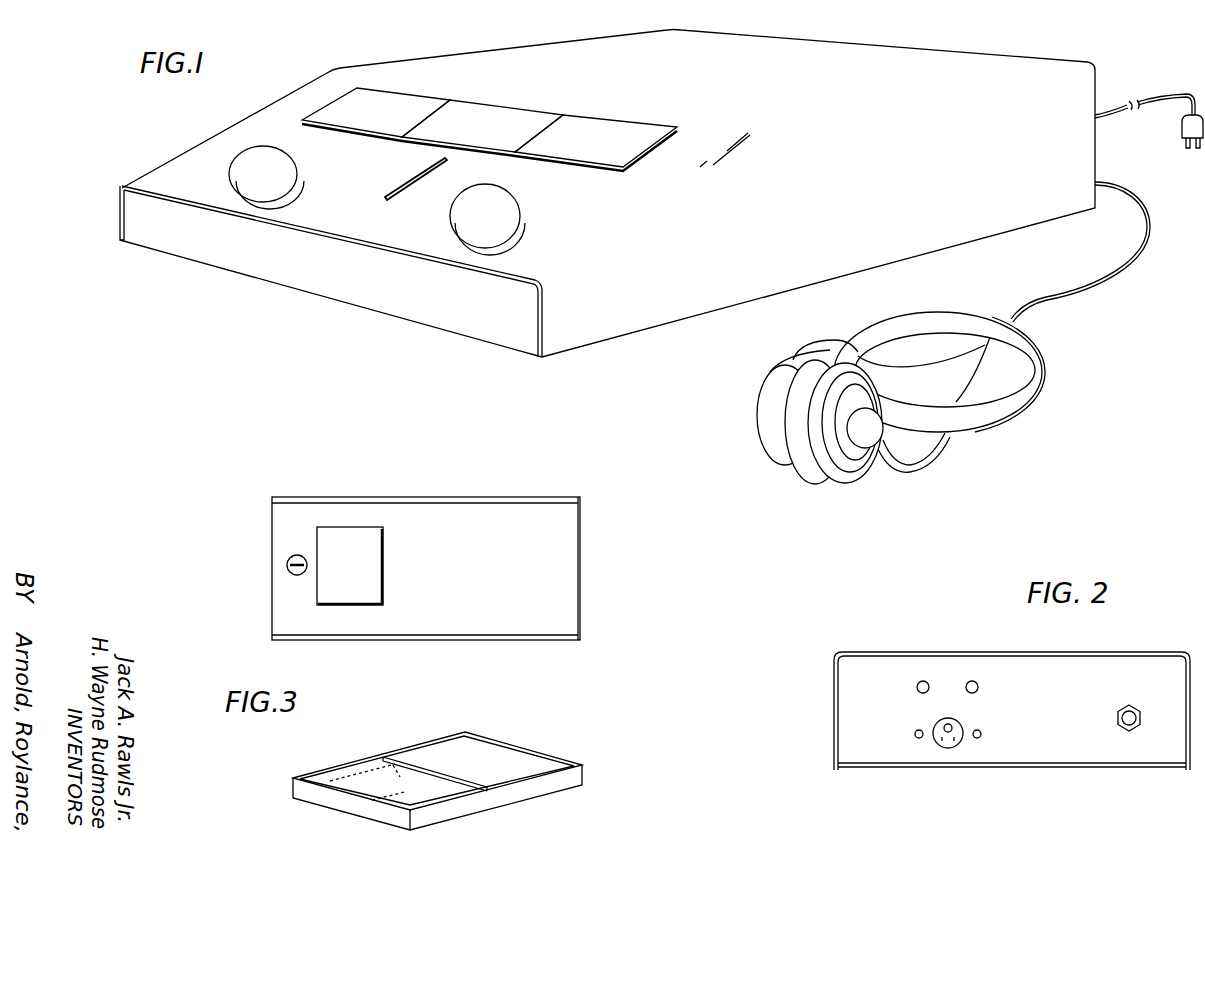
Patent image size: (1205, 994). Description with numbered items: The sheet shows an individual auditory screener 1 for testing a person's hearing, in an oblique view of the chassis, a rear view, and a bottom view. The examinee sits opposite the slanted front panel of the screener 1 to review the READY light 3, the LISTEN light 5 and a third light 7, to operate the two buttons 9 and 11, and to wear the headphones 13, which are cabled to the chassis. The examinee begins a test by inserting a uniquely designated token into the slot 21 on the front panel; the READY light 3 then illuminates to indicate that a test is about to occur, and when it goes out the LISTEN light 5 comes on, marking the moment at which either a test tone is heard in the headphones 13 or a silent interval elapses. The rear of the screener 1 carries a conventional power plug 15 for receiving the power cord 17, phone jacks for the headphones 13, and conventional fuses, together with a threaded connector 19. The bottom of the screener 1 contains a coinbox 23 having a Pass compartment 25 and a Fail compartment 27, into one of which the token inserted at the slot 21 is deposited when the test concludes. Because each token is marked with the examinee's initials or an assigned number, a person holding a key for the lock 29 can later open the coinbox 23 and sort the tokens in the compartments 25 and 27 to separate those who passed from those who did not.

In FIG. 1, the auditory screener 1 is at (659, 345).
In FIG. 2, the auditory screener 1 is at (824, 709).
In FIG. 3, the auditory screener 1 is at (435, 493).
In FIG. 1, the READY light 3 is at (358, 124).
In FIG. 1, the LISTEN light 5 is at (493, 144).
In FIG. 1, the light 7 is at (607, 158).
In FIG. 1, the button 9 is at (296, 185).
In FIG. 1, the button 11 is at (513, 201).
In FIG. 1, the headphones 13 is at (823, 475).
In FIG. 2, the power plug 15 is at (936, 742).
In FIG. 1, the power cord 17 is at (1167, 94).
In FIG. 2, the connector nut 19 is at (1130, 733).
In FIG. 1, the slot 21 is at (413, 188).
In FIG. 2, the slot 21 is at (970, 681).
In FIG. 3, the coinbox 23 is at (385, 565).
In FIG. 3, the Pass compartment 25 is at (367, 803).
In FIG. 3, the Fail compartment 27 is at (495, 742).
In FIG. 3, the lock 29 is at (287, 572).